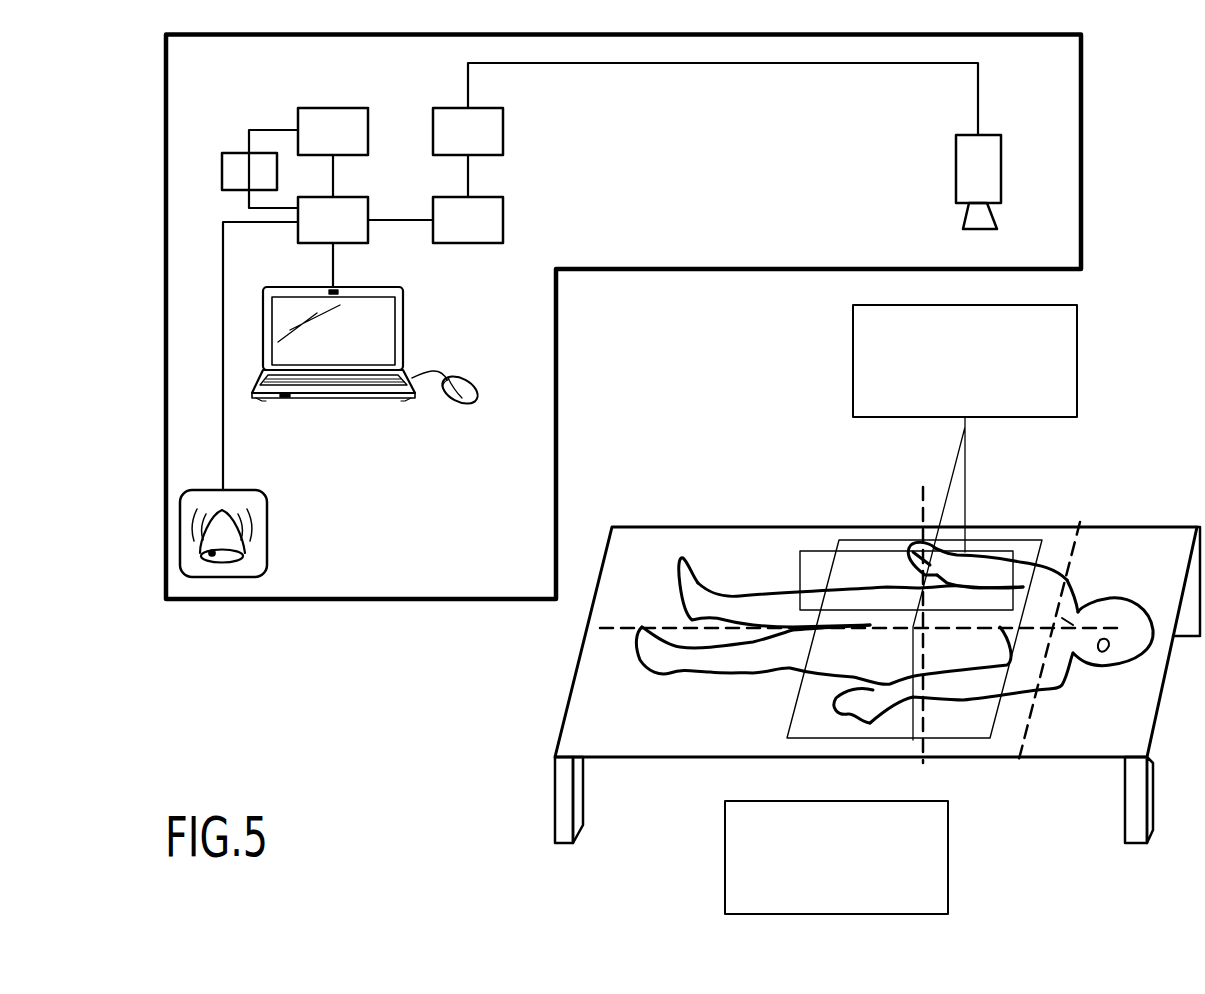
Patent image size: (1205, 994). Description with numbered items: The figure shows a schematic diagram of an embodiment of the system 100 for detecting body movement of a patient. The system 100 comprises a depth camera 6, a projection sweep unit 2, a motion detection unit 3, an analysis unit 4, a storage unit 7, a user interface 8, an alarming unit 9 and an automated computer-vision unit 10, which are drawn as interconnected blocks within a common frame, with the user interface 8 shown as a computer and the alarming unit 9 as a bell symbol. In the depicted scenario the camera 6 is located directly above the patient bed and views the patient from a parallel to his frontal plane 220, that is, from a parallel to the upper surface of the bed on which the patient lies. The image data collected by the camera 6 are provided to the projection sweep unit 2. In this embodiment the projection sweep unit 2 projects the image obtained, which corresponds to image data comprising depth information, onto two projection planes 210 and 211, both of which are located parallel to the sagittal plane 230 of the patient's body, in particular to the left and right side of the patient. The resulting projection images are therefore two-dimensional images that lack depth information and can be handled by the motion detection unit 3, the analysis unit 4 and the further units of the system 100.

The system for detecting body movement of a patient 100 is at (1060, 84).
The projection sweep unit 2 is at (477, 147).
The motion detection unit 3 is at (477, 236).
The analysis unit 4 is at (342, 236).
The depth camera 6 is at (956, 170).
The storage unit 7 is at (342, 147).
The user interface 8 is at (404, 320).
The alarming unit 9 is at (268, 530).
The automated computer-vision unit 10 is at (263, 187).
The projection plane 210 is at (1078, 338).
The projection plane 211 is at (949, 837).
The frontal plane 220 is at (790, 712).
The sagittal plane 230 is at (810, 551).